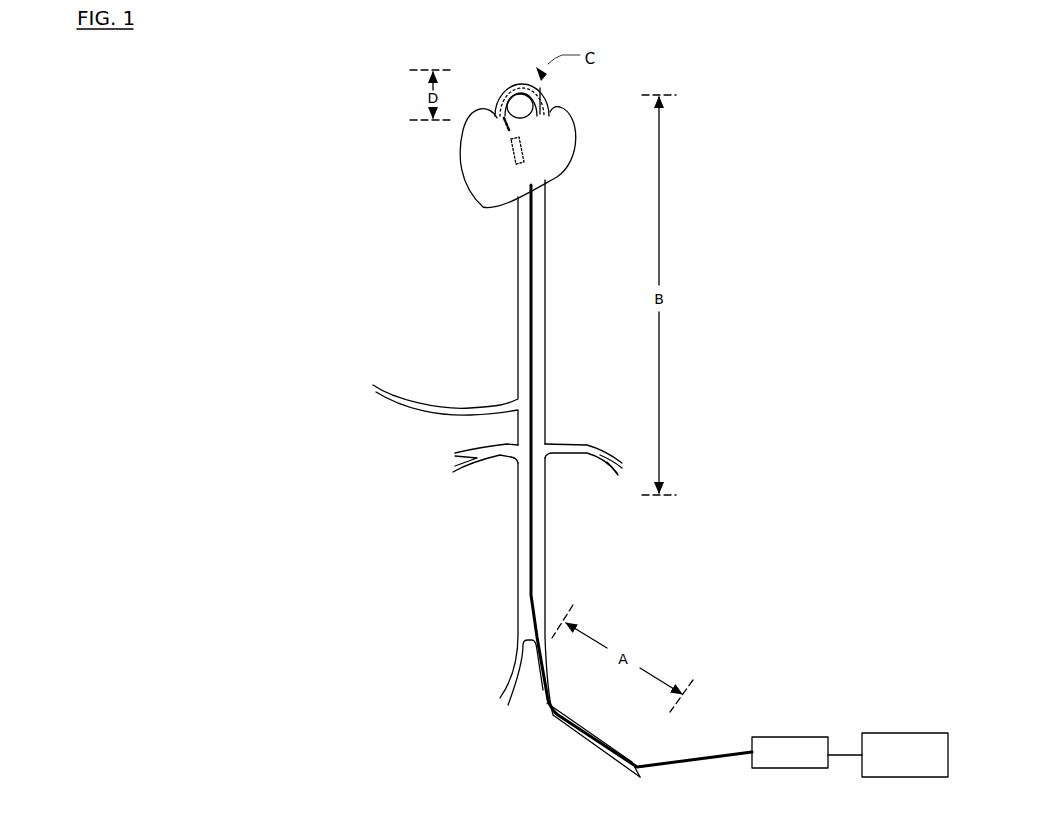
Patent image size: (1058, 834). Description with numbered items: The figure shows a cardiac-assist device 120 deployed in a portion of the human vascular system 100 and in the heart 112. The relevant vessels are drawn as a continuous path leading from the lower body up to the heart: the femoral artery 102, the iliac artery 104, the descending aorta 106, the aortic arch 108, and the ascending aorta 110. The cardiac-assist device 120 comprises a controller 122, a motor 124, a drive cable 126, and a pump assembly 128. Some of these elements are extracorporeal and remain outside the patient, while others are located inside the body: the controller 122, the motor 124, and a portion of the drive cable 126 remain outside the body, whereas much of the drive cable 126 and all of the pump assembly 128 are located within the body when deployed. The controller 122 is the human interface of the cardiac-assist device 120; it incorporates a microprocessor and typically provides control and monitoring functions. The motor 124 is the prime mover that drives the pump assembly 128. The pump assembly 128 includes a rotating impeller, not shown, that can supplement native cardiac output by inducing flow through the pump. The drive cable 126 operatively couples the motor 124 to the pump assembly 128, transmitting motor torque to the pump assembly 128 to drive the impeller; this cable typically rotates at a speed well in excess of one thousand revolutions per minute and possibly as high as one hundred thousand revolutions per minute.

The human vascular system 100 is at (380, 267).
The femoral artery 102 is at (620, 763).
The iliac artery 104 is at (550, 718).
The descending aorta 106 is at (557, 564).
The aortic arch 108 is at (526, 66).
The ascending aorta 110 is at (493, 110).
The heart 112 is at (557, 153).
The cardiac-assist device 120 is at (366, 172).
The controller 122 is at (877, 733).
The motor 124 is at (777, 737).
The drive cable 126 is at (529, 333).
The pump assembly 128 is at (507, 163).